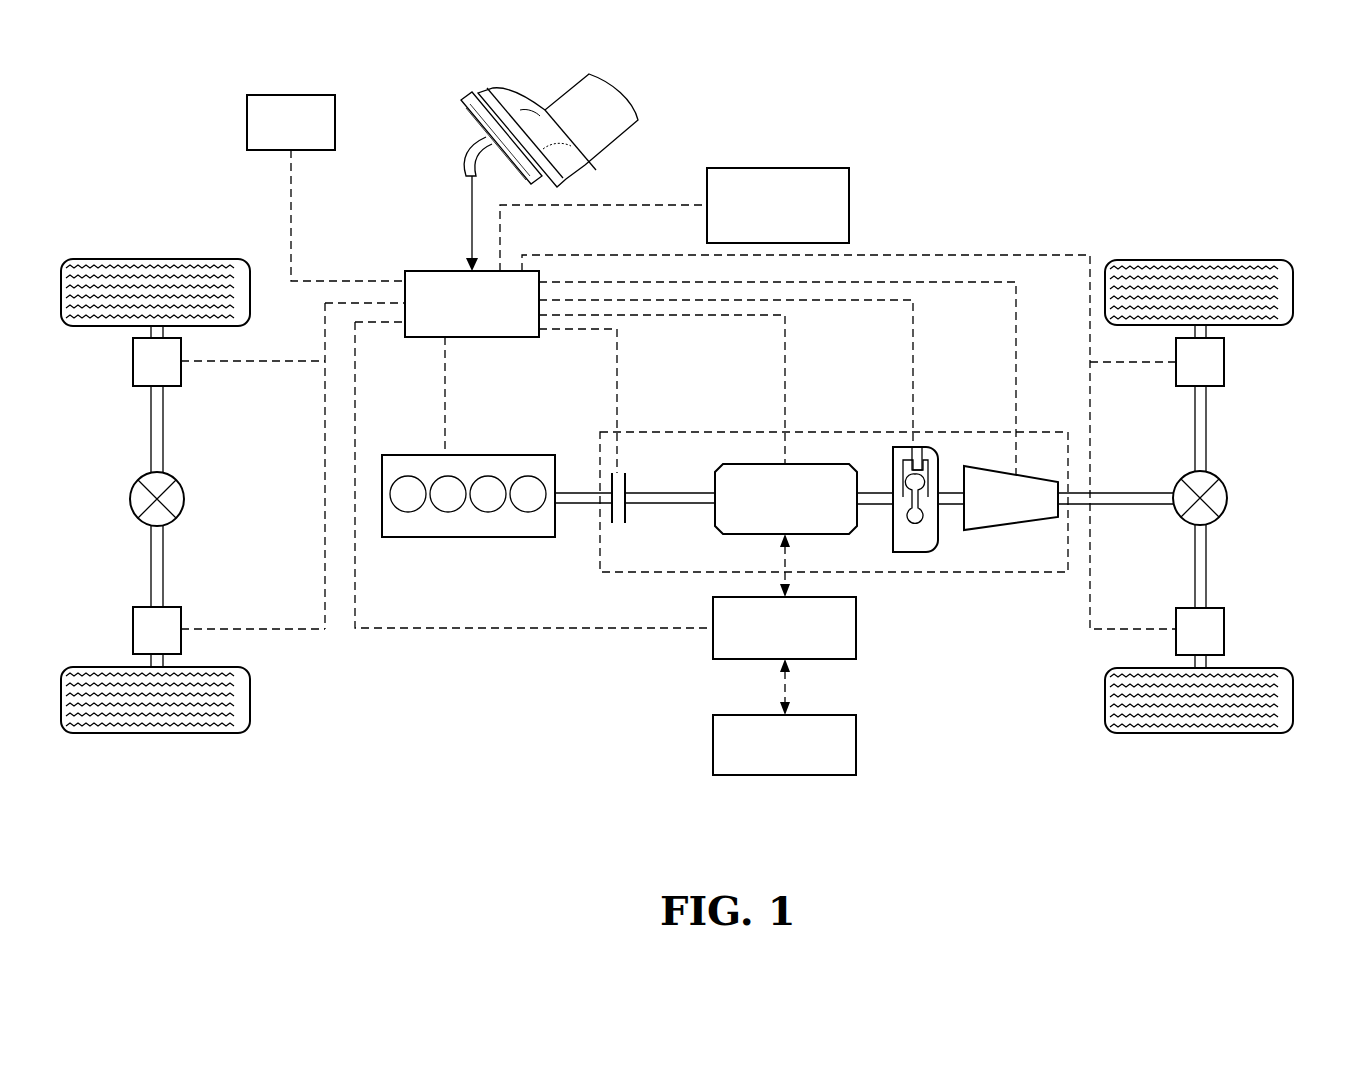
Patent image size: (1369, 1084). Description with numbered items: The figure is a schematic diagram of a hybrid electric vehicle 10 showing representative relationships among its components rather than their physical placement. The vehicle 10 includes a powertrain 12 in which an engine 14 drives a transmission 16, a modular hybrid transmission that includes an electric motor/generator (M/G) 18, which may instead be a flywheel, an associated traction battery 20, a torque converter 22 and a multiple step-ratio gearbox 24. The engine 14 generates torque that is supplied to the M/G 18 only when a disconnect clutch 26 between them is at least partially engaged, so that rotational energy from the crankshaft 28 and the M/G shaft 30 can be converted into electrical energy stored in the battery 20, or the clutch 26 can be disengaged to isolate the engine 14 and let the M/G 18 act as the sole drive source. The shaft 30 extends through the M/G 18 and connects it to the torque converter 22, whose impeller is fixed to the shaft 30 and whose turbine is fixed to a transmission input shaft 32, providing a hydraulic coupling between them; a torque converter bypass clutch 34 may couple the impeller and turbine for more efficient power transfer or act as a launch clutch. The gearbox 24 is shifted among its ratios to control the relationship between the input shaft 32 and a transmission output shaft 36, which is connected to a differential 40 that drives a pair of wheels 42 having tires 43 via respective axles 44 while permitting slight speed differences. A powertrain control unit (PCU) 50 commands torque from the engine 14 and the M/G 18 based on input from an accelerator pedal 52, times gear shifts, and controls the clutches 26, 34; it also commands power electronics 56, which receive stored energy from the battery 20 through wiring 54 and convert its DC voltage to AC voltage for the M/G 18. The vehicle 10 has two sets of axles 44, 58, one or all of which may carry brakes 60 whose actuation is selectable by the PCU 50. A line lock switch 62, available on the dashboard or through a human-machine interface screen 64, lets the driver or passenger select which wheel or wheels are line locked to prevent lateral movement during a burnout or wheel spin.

The hybrid electric vehicle 10 is at (990, 163).
The powertrain 12 is at (535, 650).
The engine 14 is at (425, 455).
The transmission 16 is at (875, 432).
The electric motor/generator (M/G) 18 is at (760, 464).
The traction battery 20 is at (857, 745).
The torque converter 22 is at (938, 504).
The gearbox 24 is at (1002, 530).
The disconnect clutch 26 is at (620, 490).
The crankshaft 28 is at (588, 493).
The M/G shaft 30 is at (692, 505).
The transmission input shaft 32 is at (950, 493).
The torque converter bypass clutch 34 is at (916, 447).
The transmission output shaft 36 is at (1138, 493).
The differential 40 is at (1227, 498).
The wheels 42 is at (153, 259).
The tires 43 is at (232, 298).
The axles 44 is at (1207, 440).
The powertrain control unit (PCU) 50 is at (430, 271).
The accelerator pedal 52 is at (478, 130).
The wiring 54 is at (790, 686).
The power electronics 56 is at (857, 628).
The axles 58 is at (151, 432).
The brakes 60 is at (133, 368).
The line lock switch 62 is at (849, 213).
The human-machine interface (HMI) screen 64 is at (247, 122).